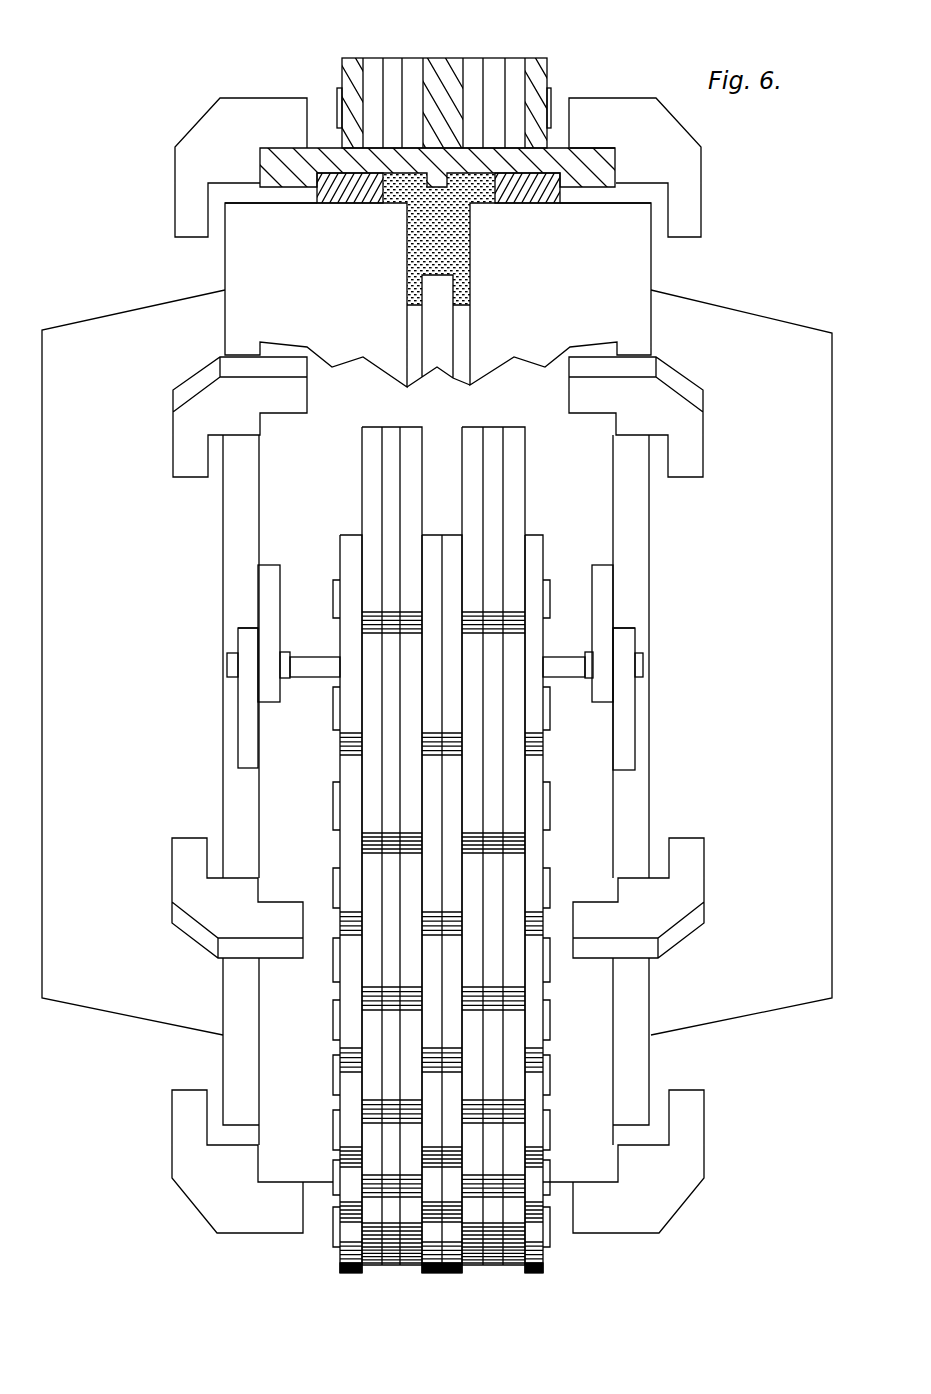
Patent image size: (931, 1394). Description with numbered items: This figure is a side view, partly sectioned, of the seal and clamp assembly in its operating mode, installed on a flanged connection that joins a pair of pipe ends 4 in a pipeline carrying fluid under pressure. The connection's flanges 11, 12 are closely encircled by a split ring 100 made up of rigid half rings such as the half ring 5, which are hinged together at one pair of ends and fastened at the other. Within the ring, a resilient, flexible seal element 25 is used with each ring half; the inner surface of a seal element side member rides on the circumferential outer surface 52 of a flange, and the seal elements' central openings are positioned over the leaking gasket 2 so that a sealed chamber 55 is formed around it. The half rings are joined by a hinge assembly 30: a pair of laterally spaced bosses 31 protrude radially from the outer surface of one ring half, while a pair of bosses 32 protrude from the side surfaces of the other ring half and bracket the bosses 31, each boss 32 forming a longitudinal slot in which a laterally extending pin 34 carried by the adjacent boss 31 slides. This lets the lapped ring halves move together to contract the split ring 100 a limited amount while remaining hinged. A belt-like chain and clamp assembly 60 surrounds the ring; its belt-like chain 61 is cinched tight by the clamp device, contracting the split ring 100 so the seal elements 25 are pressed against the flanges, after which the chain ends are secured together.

The leaking gasket 2 is at (435, 337).
The pipe ends 4 is at (100, 316).
The rigid half ring 5 is at (607, 148).
The flange 11 is at (240, 260).
The flange 12 is at (640, 252).
The seal element 25 is at (357, 190).
The hinge assembly 30 is at (662, 722).
The bosses 31 is at (245, 637).
The bosses 32 is at (248, 725).
The pin 34 is at (225, 668).
The outer surface of flange 52 is at (278, 200).
The sealed chamber 55 is at (437, 235).
The belt-like chain and clamp assembly 60 is at (397, 73).
The belt-like chain 61 is at (513, 872).
The split ring 100 is at (583, 147).